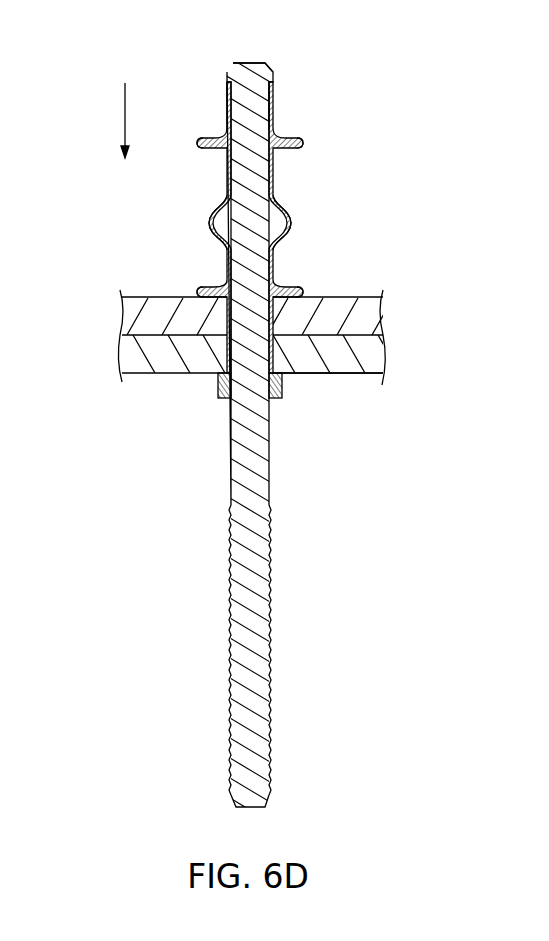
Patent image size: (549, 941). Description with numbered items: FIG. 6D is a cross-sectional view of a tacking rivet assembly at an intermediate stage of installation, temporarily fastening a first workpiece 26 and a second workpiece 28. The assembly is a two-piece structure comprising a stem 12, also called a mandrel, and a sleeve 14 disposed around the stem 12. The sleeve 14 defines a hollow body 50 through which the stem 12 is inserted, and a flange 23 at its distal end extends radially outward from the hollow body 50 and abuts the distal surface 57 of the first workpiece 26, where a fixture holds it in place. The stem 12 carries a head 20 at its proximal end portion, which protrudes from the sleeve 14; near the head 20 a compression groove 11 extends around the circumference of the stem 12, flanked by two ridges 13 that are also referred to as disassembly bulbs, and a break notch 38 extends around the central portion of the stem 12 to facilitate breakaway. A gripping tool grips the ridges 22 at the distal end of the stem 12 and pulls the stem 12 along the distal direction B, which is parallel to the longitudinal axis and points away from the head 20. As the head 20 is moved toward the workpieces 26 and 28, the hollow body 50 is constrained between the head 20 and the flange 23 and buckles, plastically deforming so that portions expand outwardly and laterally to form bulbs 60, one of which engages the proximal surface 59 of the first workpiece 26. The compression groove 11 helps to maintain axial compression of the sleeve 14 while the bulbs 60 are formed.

The distal direction B is at (126, 133).
The stem 12 is at (253, 177).
The ridges 22 is at (230, 520).
The head 20 is at (266, 64).
The compression groove 11 is at (273, 108).
The ridges 13 is at (228, 110).
The hollow body 50 is at (273, 178).
The bulb 60 is at (300, 145).
The sleeve 14 is at (224, 252).
The proximal surface 59 is at (228, 337).
The second workpiece 28 is at (125, 320).
The first workpiece 26 is at (123, 362).
The distal surface 57 is at (327, 375).
The flange 23 is at (218, 390).
The break notch 38 is at (268, 388).